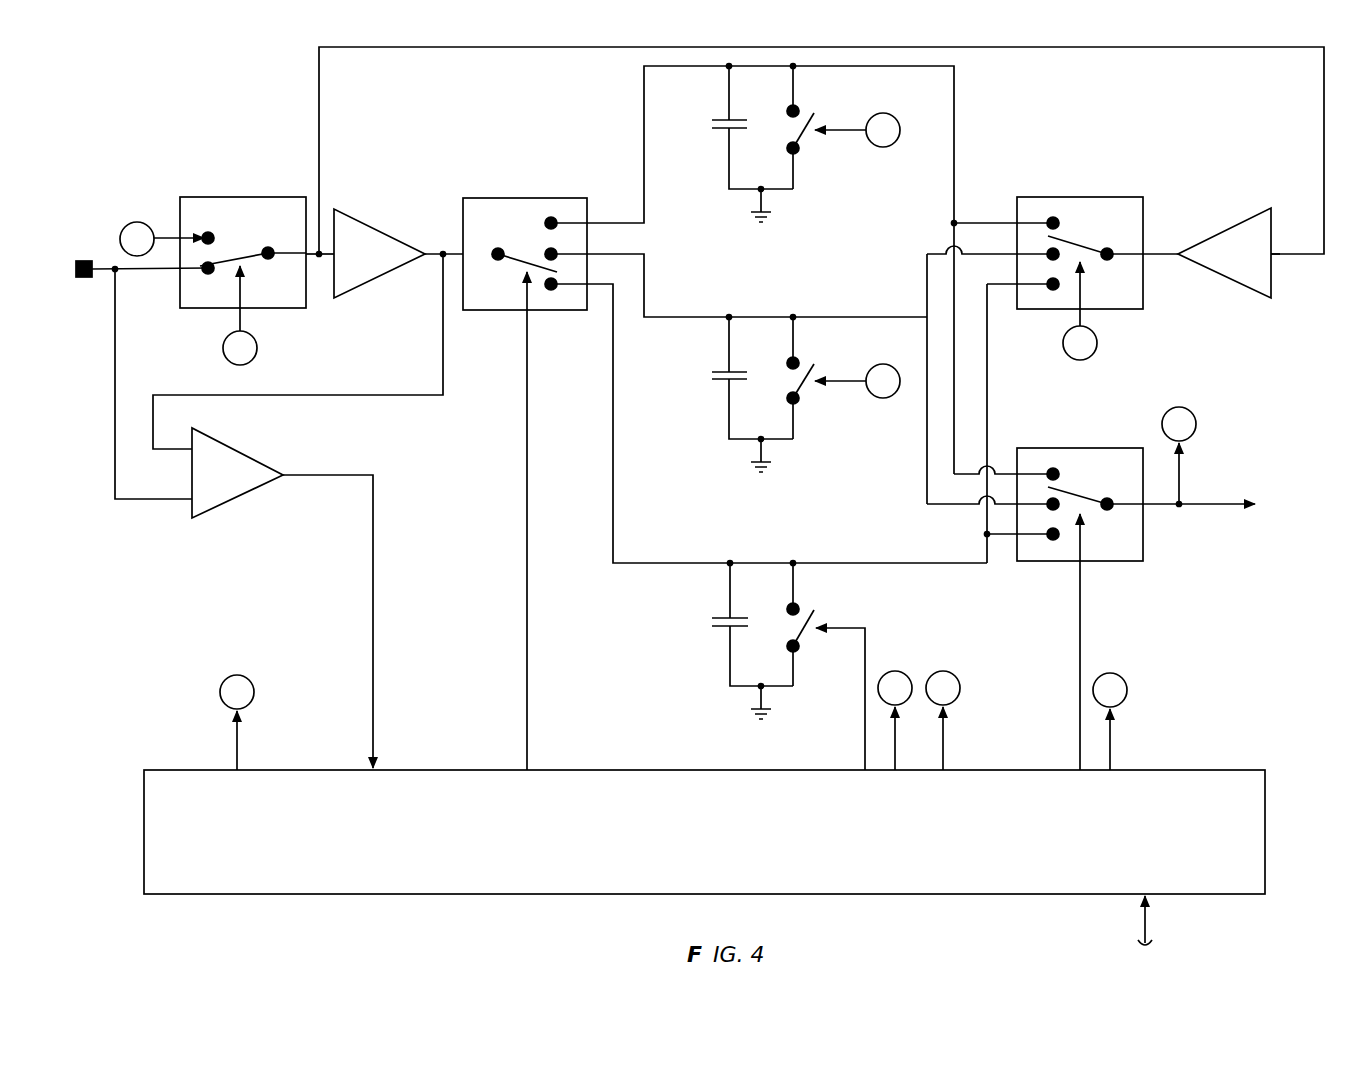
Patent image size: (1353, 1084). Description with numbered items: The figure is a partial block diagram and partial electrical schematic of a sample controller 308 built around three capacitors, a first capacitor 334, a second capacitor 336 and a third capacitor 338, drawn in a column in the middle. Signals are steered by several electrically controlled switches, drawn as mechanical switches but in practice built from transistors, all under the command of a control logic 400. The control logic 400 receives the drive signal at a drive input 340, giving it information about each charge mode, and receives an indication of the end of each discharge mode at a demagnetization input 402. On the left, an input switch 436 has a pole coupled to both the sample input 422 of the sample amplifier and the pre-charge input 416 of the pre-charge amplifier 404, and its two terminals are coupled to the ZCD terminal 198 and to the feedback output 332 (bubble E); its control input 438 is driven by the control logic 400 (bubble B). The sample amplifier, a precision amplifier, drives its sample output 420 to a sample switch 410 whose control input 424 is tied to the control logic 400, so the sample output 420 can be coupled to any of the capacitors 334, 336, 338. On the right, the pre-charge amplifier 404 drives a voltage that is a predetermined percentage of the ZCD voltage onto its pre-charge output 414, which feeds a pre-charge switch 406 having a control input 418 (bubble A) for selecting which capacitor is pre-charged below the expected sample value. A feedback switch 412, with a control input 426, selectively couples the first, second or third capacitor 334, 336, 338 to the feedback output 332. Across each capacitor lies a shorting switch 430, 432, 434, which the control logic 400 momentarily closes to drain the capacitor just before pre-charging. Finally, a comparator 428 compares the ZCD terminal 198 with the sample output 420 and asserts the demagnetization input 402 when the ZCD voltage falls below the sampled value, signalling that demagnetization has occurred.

The sample controller 308 is at (141, 90).
The ZCD terminal 198 is at (78, 260).
The input switch 436 is at (226, 197).
The control input 438 is at (238, 312).
The control input 418 is at (338, 210).
The sample output 420 is at (424, 252).
The sample input 422 is at (334, 260).
The sample switch 410 is at (505, 197).
The control input 424 is at (528, 312).
The first capacitor 334 is at (712, 131).
The second capacitor 336 is at (716, 392).
The third capacitor 338 is at (712, 646).
The shorting switch 430 is at (818, 152).
The shorting switch 432 is at (816, 396).
The shorting switch 434 is at (826, 612).
The pre-charge switch 406 is at (1070, 197).
The pre-charge amplifier 404 is at (1247, 220).
The pre-charge output 414 is at (1180, 258).
The pre-charge input 416 is at (1272, 258).
The feedback switch 412 is at (1143, 545).
The control input 426 is at (1080, 562).
The feedback output 332 is at (1256, 505).
The comparator 428 is at (237, 502).
The demagnetization input 402 is at (377, 770).
The control logic 400 is at (704, 782).
The drive input 340 is at (1147, 896).